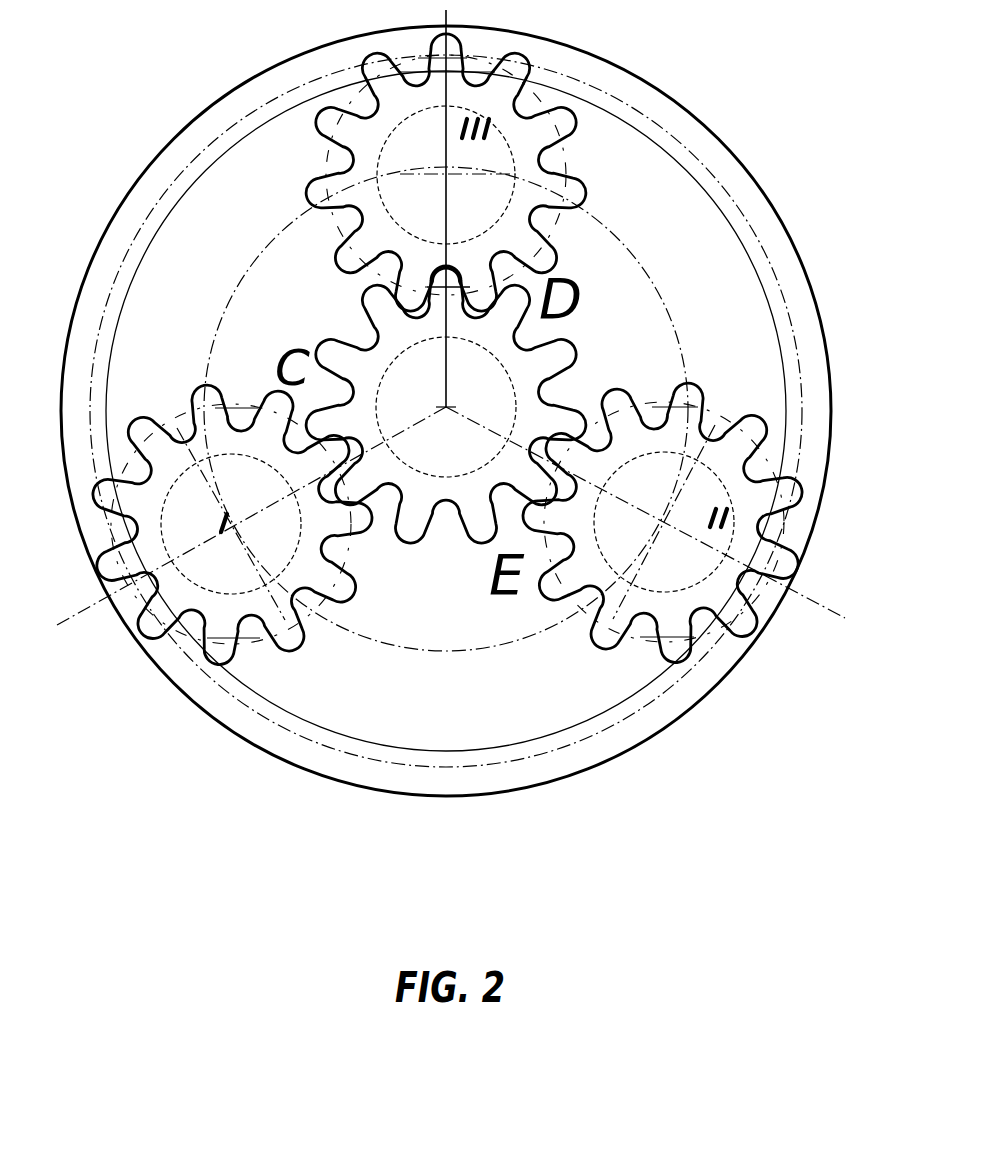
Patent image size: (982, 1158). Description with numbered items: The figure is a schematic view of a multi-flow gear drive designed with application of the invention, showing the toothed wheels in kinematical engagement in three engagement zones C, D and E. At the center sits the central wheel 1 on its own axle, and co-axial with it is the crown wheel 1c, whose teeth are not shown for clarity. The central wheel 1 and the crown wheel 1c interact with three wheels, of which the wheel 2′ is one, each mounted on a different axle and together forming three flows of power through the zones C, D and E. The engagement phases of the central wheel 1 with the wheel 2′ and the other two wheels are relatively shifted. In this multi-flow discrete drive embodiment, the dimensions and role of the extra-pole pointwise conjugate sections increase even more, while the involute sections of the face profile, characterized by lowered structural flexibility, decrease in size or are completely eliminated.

The central wheel 1 is at (572, 338).
The co-axial crown wheel 1c is at (122, 202).
The wheel 2′ is at (143, 640).